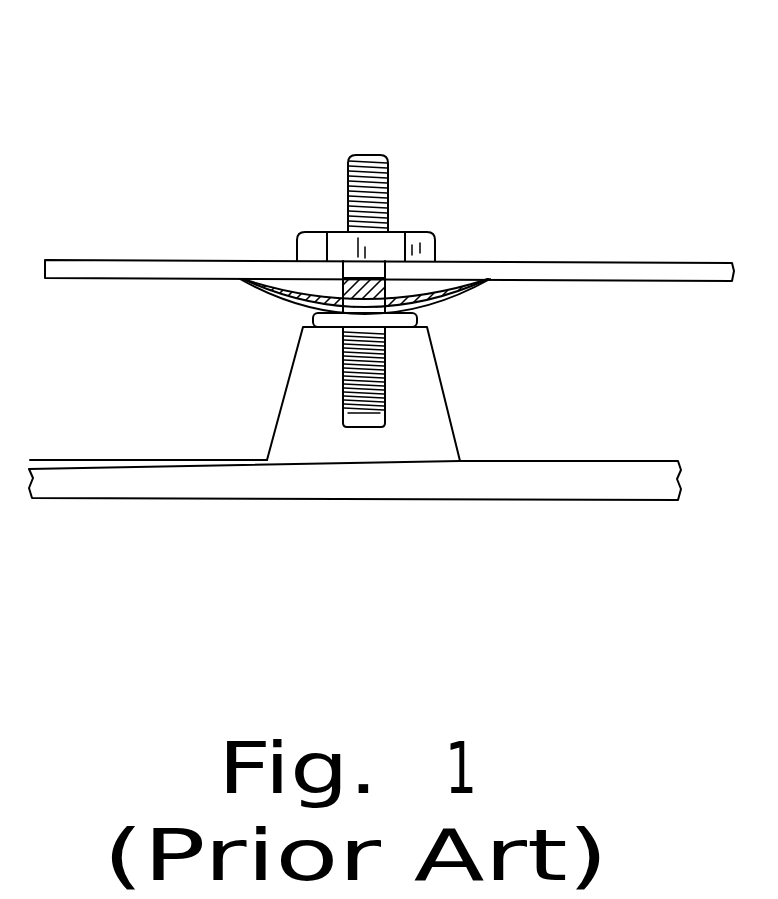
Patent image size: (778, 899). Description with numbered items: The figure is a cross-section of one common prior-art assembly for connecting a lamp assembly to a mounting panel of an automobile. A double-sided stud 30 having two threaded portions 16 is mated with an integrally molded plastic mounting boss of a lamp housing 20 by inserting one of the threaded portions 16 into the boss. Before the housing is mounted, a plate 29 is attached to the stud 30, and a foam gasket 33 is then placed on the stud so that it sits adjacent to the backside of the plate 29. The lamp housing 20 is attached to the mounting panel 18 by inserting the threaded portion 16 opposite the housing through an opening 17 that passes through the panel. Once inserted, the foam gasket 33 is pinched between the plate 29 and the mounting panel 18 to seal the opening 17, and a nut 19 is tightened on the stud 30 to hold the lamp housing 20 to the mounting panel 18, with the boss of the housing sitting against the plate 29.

The double-sided stud 30 is at (424, 123).
The threaded portions 16 is at (387, 206).
The opening 17 is at (437, 260).
The mounting panel 18 is at (158, 252).
The nut 19 is at (342, 231).
The lamp housing 20 is at (115, 452).
The plate 29 is at (270, 300).
The foam gasket 33 is at (437, 284).